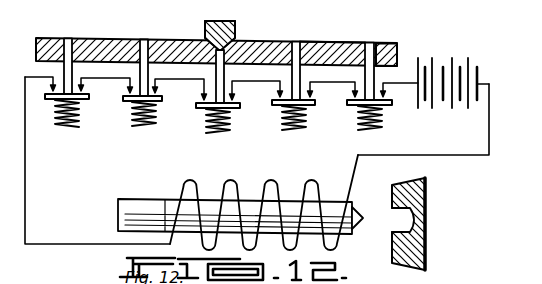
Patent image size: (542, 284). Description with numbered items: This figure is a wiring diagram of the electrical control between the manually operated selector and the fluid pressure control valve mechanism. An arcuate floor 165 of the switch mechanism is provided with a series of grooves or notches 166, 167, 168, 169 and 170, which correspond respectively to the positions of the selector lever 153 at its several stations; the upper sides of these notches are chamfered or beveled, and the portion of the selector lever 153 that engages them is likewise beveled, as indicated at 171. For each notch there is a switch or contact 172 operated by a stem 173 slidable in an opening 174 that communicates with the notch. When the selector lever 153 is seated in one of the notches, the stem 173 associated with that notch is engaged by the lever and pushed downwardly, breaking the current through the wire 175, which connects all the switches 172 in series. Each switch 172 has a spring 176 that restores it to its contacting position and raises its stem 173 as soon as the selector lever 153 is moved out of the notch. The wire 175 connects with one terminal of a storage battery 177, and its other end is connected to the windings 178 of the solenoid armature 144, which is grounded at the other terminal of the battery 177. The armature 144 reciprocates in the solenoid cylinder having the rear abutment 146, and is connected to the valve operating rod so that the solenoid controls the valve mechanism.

The armature 144 is at (255, 184).
The rear abutment 146 is at (425, 193).
The selector lever 153 is at (218, 21).
The arcuate floor 165 is at (404, 55).
The notch 166 is at (206, 31).
The notch 167 is at (301, 42).
The notch 168 is at (377, 45).
The notch 169 is at (144, 39).
The notch 170 is at (67, 38).
The beveled portion of selector lever 171 is at (238, 43).
The switch 172 is at (358, 111).
The stem 173 is at (378, 80).
The opening 174 is at (366, 43).
The wire 175 is at (25, 176).
The spring 176 is at (135, 113).
The storage battery 177 is at (468, 66).
The windings 178 is at (190, 180).